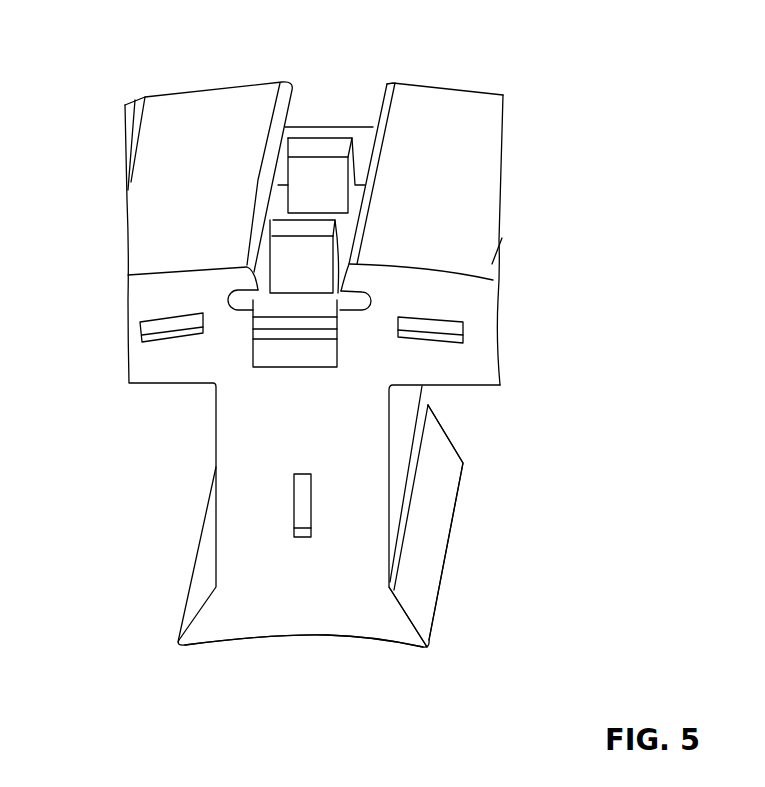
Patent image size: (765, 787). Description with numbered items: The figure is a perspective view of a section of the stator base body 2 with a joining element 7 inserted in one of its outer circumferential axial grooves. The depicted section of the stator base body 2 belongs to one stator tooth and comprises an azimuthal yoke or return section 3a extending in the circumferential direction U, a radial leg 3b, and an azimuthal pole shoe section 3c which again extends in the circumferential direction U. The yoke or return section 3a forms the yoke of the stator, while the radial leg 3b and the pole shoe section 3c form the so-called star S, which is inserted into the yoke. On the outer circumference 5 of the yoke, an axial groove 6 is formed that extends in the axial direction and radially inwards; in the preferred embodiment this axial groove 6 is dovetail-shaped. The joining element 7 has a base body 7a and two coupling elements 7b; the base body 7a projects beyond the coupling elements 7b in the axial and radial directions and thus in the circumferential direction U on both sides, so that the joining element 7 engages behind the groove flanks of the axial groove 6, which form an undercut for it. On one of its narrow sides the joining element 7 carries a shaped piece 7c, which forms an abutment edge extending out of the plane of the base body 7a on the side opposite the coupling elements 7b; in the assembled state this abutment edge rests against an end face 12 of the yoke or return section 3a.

The stator base body 2 is at (166, 535).
The yoke or return section 3a is at (487, 343).
The radial leg 3b is at (348, 465).
The pole shoe section 3c is at (403, 633).
The outer circumference 5 is at (482, 127).
The axial groove 6 is at (334, 100).
The joining element 7 is at (207, 190).
The base body 7a is at (280, 205).
The coupling element 7b is at (300, 258).
The shaped piece 7c is at (273, 337).
The end face 12 is at (147, 363).
The star S is at (426, 513).
The circumferential direction U is at (463, 60).